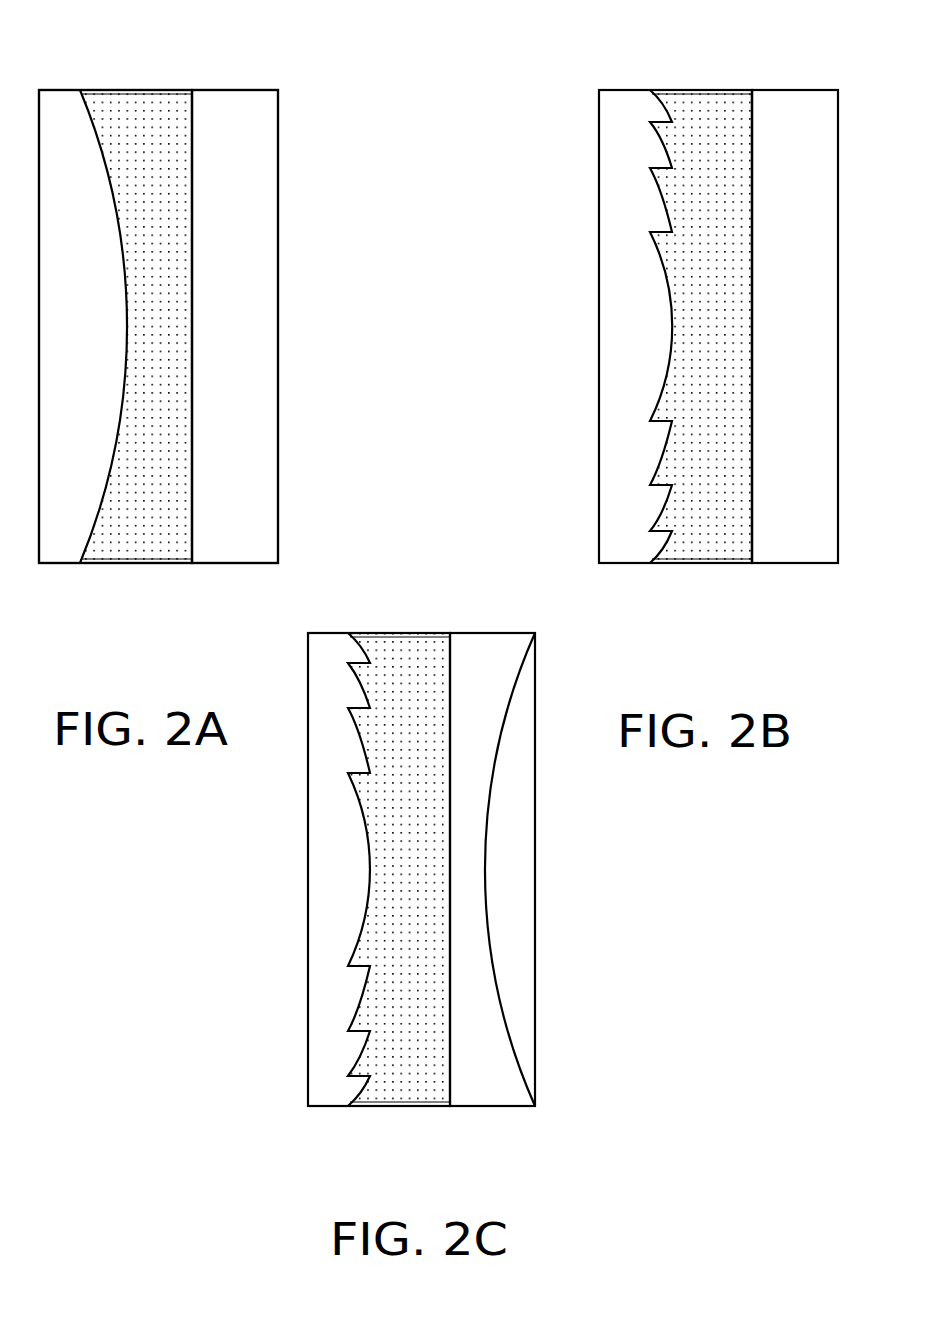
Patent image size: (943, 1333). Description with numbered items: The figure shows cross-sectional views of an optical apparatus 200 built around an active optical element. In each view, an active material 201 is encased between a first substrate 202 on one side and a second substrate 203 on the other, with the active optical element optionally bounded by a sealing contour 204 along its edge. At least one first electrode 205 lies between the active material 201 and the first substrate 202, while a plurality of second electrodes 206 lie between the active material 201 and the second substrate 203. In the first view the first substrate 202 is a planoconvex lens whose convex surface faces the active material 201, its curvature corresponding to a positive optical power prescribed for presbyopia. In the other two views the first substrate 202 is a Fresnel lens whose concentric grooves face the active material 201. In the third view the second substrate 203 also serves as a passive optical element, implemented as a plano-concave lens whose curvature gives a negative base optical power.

In FIG. 2A, the optical apparatus 200 is at (326, 505).
In FIG. 2A, the active material 201 is at (163, 522).
In FIG. 2B, the active material 201 is at (717, 522).
In FIG. 2C, the active material 201 is at (417, 1063).
In FIG. 2A, the first substrate 202 is at (65, 545).
In FIG. 2B, the first substrate 202 is at (622, 545).
In FIG. 2C, the first substrate 202 is at (320, 1087).
In FIG. 2A, the second substrate 203 is at (248, 545).
In FIG. 2B, the second substrate 203 is at (805, 545).
In FIG. 2C, the second substrate 203 is at (503, 1087).
In FIG. 2A, the sealing contour 204 is at (140, 92).
In FIG. 2B, the sealing contour 204 is at (705, 92).
In FIG. 2A, the first electrode 205 is at (127, 268).
In FIG. 2B, the first electrode 205 is at (651, 236).
In FIG. 2A, the second electrodes 206 is at (192, 385).
In FIG. 2B, the second electrodes 206 is at (753, 385).